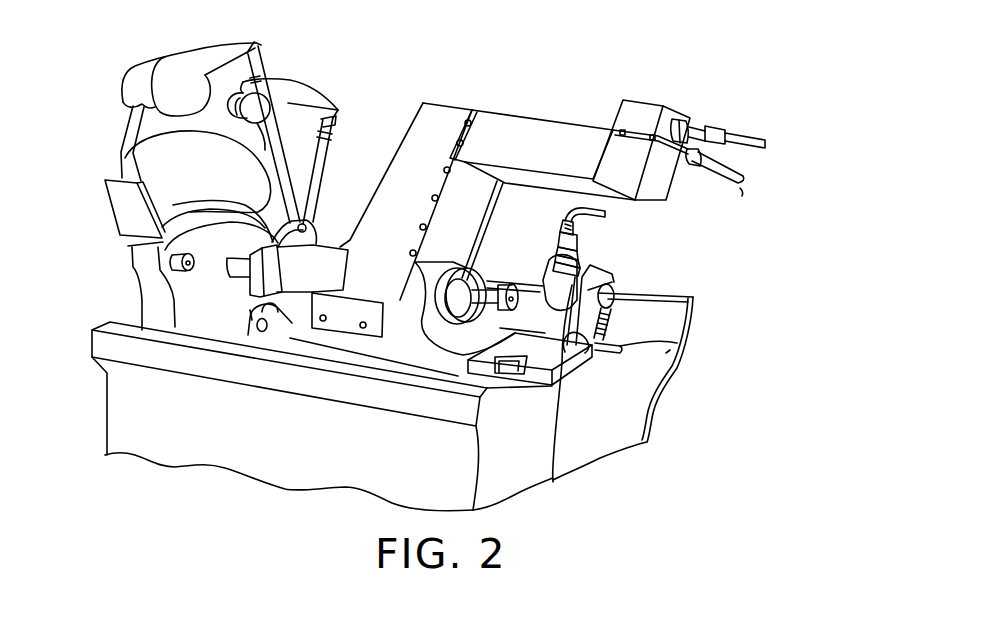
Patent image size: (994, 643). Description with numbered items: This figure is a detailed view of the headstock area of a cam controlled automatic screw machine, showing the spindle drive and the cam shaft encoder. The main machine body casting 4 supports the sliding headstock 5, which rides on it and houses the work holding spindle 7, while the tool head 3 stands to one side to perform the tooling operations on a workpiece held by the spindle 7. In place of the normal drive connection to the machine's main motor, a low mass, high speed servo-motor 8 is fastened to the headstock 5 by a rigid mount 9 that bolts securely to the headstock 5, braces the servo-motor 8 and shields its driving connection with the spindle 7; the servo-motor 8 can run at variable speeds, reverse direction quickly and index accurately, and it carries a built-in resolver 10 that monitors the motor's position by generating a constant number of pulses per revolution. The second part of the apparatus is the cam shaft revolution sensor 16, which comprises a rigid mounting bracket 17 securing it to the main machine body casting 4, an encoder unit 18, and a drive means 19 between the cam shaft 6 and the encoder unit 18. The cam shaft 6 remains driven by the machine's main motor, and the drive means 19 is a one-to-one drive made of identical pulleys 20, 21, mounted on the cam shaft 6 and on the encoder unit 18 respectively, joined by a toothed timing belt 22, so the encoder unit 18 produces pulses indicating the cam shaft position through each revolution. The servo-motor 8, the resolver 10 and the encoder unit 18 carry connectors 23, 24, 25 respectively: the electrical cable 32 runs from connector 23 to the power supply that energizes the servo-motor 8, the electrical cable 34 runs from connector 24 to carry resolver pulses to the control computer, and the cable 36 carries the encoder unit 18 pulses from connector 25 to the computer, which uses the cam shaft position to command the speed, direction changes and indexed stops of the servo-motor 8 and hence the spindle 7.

The tool head 3 is at (157, 167).
The main machine body casting 4 is at (533, 445).
The sliding headstock 5 is at (277, 292).
The cam shaft 6 is at (670, 350).
The work holding spindle 7 is at (233, 275).
The servo-motor 8 is at (540, 140).
The rigid mount 9 is at (412, 165).
The resolver 10 is at (662, 180).
The cam shaft revolution sensor 16 is at (593, 255).
The rigid mounting bracket 17 is at (610, 267).
The encoder unit 18 is at (552, 283).
The drive means 19 is at (617, 313).
The pulley 20 is at (592, 347).
The pulley 21 is at (693, 298).
The toothed timing belt 22 is at (580, 342).
The connector 23 is at (688, 119).
The connector 24 is at (743, 166).
The connector 25 is at (578, 250).
The electrical cable 32 is at (747, 133).
The electrical cable 34 is at (728, 182).
The cable 36 is at (567, 215).